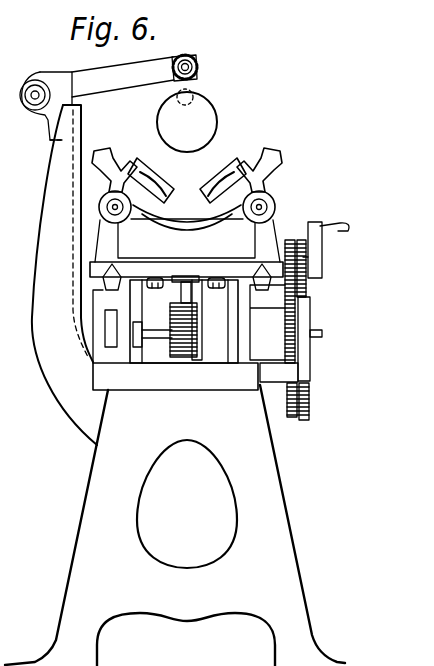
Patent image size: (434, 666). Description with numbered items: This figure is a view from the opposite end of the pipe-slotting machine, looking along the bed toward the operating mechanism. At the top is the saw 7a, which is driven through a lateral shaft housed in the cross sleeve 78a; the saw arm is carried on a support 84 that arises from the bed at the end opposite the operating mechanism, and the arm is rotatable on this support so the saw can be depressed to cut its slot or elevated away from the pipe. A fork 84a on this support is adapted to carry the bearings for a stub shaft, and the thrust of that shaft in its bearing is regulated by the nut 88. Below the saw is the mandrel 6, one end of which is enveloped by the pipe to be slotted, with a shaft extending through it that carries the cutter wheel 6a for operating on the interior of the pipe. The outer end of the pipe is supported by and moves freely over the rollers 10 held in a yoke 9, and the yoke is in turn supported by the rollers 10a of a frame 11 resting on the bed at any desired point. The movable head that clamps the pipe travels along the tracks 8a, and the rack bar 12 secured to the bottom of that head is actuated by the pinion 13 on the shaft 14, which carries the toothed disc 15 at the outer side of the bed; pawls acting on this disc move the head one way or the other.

The mandrel 6 is at (223, 114).
The cutter wheel 6a is at (197, 89).
The saw 7a is at (29, 102).
The tracks 8a is at (100, 287).
The yoke 9 is at (262, 172).
The rollers 10 is at (149, 162).
The rollers 10a is at (100, 208).
The frame 11 is at (269, 228).
The rack bar 12 is at (181, 295).
The pinion 13 is at (186, 358).
The shaft 14 is at (150, 340).
The toothed disc 15 is at (308, 293).
The cross sleeve 78a is at (106, 88).
The support 84 is at (33, 306).
The fork 84a is at (47, 122).
The nut 88 is at (34, 74).